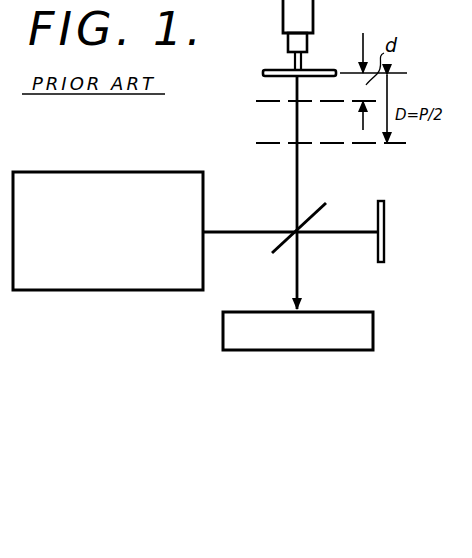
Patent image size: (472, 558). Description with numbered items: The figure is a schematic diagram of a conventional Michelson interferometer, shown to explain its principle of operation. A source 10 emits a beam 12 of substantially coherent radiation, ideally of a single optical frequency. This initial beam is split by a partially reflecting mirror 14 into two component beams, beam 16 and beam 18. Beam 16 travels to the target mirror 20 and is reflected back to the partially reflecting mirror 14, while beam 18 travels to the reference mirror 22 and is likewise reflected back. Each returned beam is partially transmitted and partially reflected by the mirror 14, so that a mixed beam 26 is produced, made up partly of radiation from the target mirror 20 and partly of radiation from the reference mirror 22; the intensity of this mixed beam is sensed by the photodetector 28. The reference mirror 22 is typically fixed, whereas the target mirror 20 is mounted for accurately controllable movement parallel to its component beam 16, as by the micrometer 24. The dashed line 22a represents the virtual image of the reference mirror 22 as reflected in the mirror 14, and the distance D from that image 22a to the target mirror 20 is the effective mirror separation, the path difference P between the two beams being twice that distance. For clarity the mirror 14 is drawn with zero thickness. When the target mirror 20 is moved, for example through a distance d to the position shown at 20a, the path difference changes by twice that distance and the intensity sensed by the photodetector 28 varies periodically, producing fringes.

The source 10 is at (116, 172).
The beam 12 is at (262, 229).
The partially reflecting mirror 14 is at (272, 254).
The beam 16 is at (296, 164).
The beam 18 is at (339, 229).
The target mirror 20 is at (264, 74).
The position of target mirror 20a is at (259, 101).
The reference mirror 22 is at (380, 202).
The virtual image of reference mirror 22a is at (257, 143).
The micrometer 24 is at (313, 10).
The mixed beam 26 is at (305, 281).
The photodetector 28 is at (223, 335).